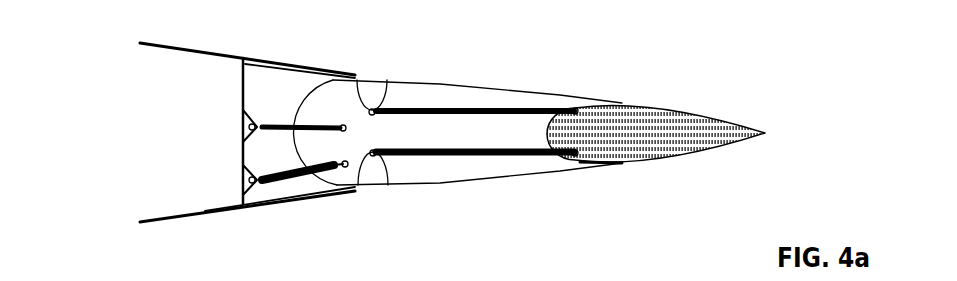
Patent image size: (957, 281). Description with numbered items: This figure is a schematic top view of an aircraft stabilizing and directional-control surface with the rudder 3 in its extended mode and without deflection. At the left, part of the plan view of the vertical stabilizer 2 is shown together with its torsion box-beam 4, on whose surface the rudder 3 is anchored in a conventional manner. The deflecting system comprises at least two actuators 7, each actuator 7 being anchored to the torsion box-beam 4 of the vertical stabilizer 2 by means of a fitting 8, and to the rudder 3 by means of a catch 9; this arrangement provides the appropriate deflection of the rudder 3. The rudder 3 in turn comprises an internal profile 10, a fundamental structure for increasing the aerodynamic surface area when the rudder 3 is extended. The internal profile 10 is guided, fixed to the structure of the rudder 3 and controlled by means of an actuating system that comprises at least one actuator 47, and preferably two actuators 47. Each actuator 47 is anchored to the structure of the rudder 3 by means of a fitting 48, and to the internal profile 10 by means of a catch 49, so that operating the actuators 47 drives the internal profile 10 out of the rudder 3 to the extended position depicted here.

The vertical stabilizer 2 is at (148, 124).
The rudder 3 is at (495, 178).
The torsion box-beam 4 is at (218, 212).
The actuator 7 is at (283, 133).
The fitting 8 is at (242, 165).
The catch 9 is at (345, 161).
The internal profile 10 is at (660, 135).
The actuator 47 is at (402, 114).
The fitting 48 is at (370, 115).
The catch 49 is at (577, 114).